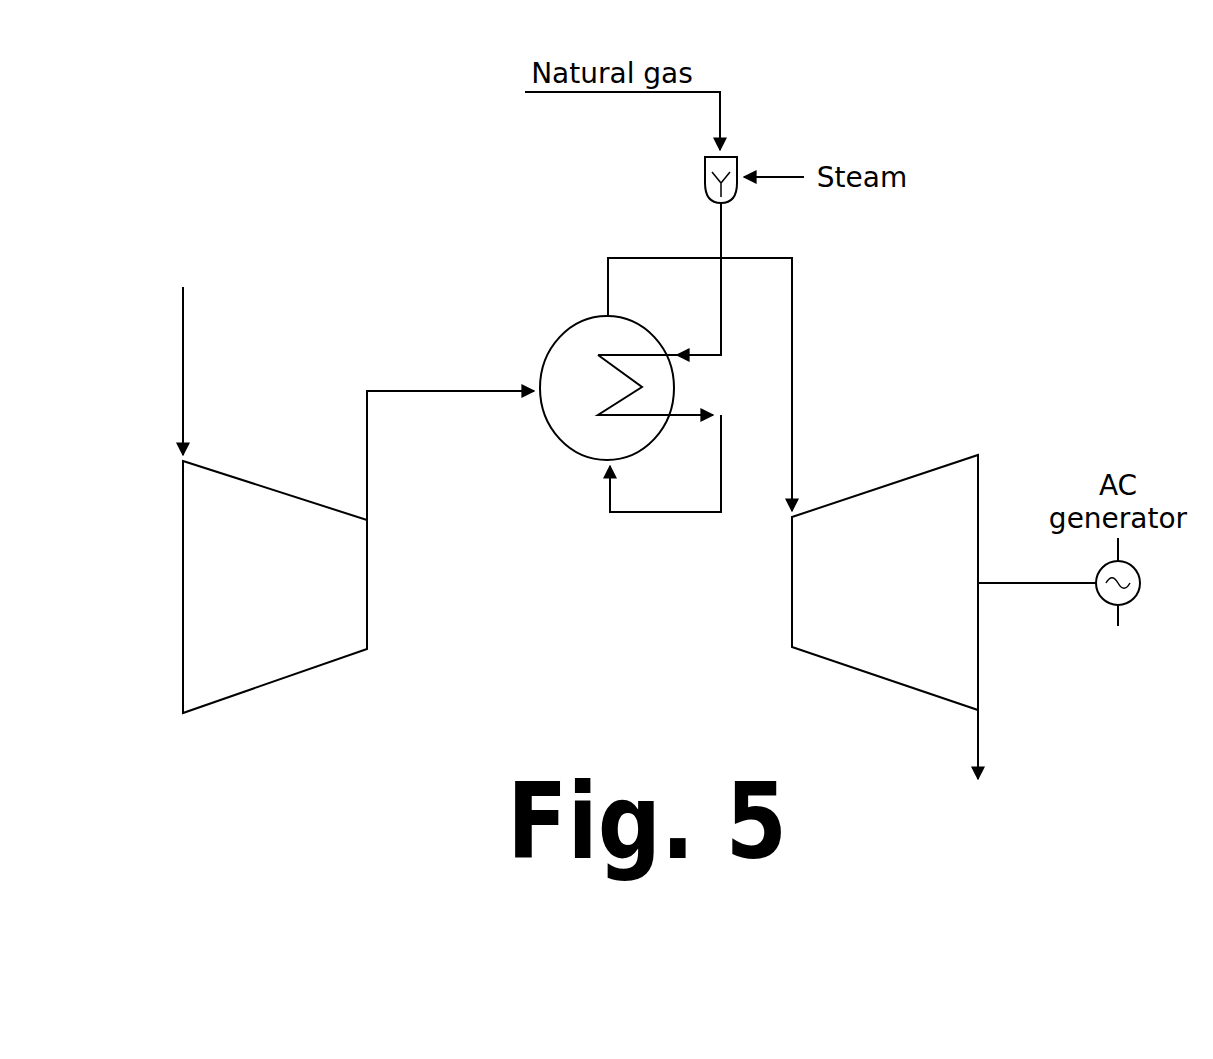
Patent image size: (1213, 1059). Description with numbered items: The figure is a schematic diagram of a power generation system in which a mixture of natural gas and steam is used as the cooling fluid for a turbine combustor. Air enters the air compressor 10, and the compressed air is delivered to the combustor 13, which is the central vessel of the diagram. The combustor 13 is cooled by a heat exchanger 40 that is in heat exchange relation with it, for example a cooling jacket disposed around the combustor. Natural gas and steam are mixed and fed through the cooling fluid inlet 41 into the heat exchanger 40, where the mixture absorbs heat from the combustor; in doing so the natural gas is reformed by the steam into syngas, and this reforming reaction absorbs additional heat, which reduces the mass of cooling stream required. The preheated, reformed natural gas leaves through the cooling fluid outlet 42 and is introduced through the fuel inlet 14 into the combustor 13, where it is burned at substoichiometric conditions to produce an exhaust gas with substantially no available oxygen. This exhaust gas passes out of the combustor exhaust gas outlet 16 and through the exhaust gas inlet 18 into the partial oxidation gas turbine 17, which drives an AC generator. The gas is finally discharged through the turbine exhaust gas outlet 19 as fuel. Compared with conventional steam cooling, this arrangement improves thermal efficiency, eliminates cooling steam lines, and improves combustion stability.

The air compressor 10 is at (318, 664).
The combustor 13 is at (553, 338).
The fuel inlet 14 is at (603, 461).
The combustor exhaust gas outlet 16 is at (606, 311).
The gas turbine 17 is at (792, 619).
The exhaust gas inlet 18 is at (793, 516).
The turbine exhaust gas outlet 19 is at (978, 710).
The heat exchanger 40 is at (598, 410).
The cooling fluid inlet 41 is at (672, 347).
The cooling fluid outlet 42 is at (702, 388).